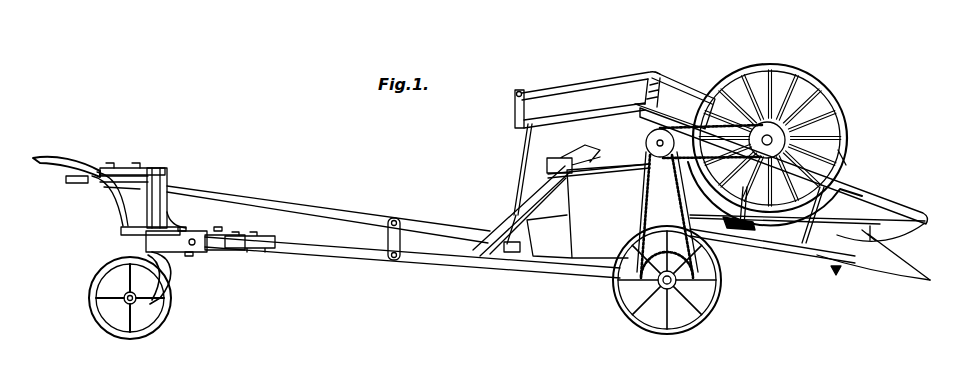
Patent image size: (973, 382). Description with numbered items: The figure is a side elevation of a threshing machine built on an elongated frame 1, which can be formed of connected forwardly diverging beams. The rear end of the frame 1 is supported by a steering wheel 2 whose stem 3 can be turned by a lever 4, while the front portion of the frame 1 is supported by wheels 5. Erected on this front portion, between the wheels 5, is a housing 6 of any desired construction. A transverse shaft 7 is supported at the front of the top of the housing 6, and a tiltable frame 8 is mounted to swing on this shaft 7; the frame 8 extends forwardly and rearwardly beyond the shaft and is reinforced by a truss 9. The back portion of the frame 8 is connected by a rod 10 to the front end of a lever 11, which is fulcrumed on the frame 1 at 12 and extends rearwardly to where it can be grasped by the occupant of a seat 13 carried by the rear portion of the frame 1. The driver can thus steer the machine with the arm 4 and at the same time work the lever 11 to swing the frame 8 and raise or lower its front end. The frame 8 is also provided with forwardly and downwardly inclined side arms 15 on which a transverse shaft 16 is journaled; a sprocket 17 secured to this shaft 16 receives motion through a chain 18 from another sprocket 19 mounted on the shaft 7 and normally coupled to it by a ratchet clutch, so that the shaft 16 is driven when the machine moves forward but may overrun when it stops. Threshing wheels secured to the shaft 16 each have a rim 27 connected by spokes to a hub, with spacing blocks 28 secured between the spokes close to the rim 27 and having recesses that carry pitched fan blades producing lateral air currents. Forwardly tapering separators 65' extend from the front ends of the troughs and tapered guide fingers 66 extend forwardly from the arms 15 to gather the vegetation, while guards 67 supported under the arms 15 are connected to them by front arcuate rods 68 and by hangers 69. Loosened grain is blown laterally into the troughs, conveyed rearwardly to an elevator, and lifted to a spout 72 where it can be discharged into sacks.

The elongated frame 1 is at (348, 254).
The steering wheel 2 is at (166, 298).
The stem 3 is at (168, 180).
The lever 4 is at (130, 167).
The wheels 5 is at (632, 298).
The housing 6 is at (588, 211).
The transverse shaft 7 is at (646, 146).
The tiltable frame 8 is at (584, 110).
The truss 9 is at (612, 74).
The rod 10 is at (520, 165).
The lever 11 is at (430, 224).
The fulcrum 12 is at (393, 216).
The seat 13 is at (68, 174).
The side arms 15 is at (876, 201).
The transverse shaft 16 is at (843, 156).
The sprocket 17 is at (843, 128).
The chain 18 is at (675, 100).
The sprocket 19 is at (660, 84).
The rim 27 is at (772, 65).
The spacing blocks 28 is at (828, 112).
The forwardly tapering separators 65' is at (879, 283).
The tapered guide fingers 66 is at (893, 223).
The guards 67 is at (820, 247).
The front arcuate rods 68 is at (877, 233).
The hangers 69 is at (741, 228).
The spout 72 is at (552, 160).